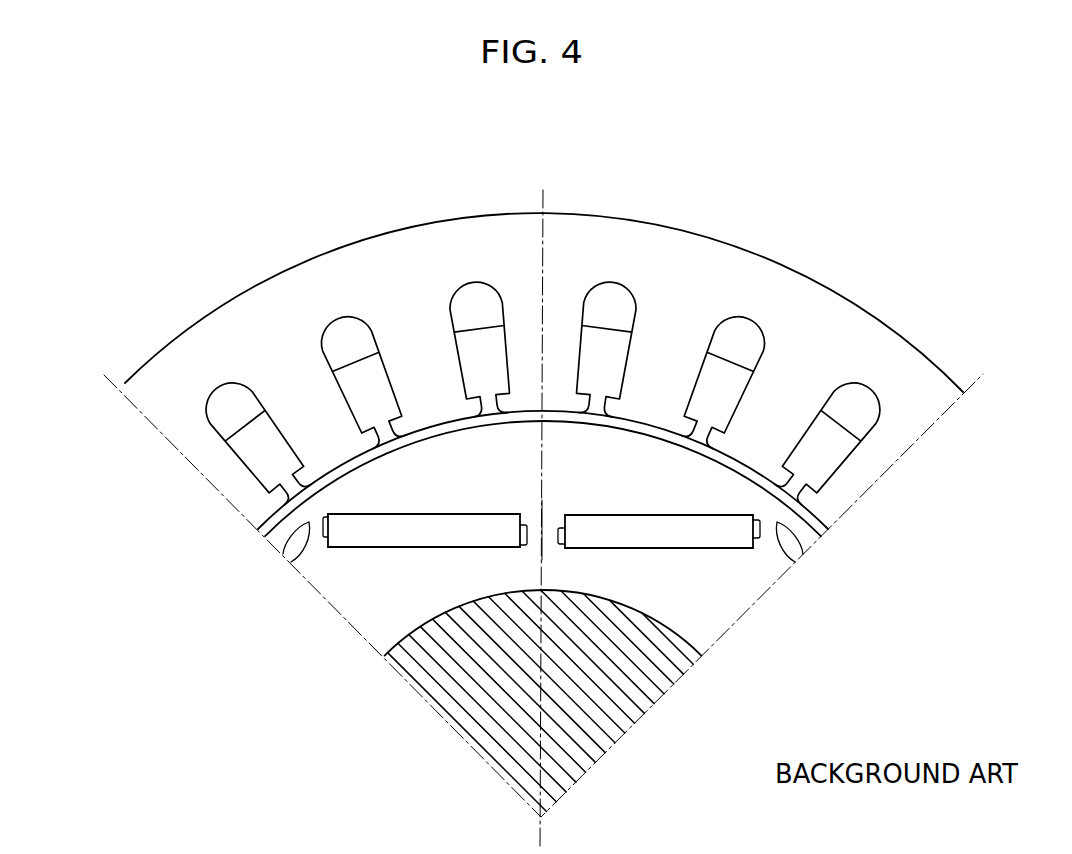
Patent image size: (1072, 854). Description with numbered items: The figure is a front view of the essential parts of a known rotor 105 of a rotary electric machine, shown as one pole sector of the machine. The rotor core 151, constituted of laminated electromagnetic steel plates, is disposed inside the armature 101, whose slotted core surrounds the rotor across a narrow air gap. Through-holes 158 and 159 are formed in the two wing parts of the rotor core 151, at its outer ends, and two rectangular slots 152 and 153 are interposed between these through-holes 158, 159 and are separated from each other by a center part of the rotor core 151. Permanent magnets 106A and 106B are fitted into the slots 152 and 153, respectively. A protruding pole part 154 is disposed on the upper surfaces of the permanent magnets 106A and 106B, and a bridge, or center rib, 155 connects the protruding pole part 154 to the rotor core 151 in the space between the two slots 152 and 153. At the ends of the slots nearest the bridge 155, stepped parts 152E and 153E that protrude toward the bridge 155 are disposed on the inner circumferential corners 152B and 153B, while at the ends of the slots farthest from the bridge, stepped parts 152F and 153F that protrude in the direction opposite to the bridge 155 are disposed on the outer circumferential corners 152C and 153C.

The armature 101 is at (468, 210).
The rotor 105 is at (548, 486).
The permanent magnet 106A is at (370, 512).
The permanent magnet 106B is at (720, 515).
The rotor core 151 is at (687, 587).
The rectangular slot 152 is at (370, 512).
The inner circumferential corner 152B is at (515, 545).
The outer circumferential corner 152C is at (333, 519).
The stepped part 152E is at (487, 550).
The stepped part 152F is at (333, 520).
The rectangular slot 153 is at (720, 515).
The inner circumferential corner 153B is at (568, 550).
The outer circumferential corner 153C is at (742, 520).
The stepped part 153E is at (609, 550).
The stepped part 153F is at (748, 521).
The protruding pole part 154 is at (640, 467).
The bridge (center rib) 155 is at (533, 527).
The through-hole 158 is at (288, 549).
The through-hole 159 is at (797, 556).